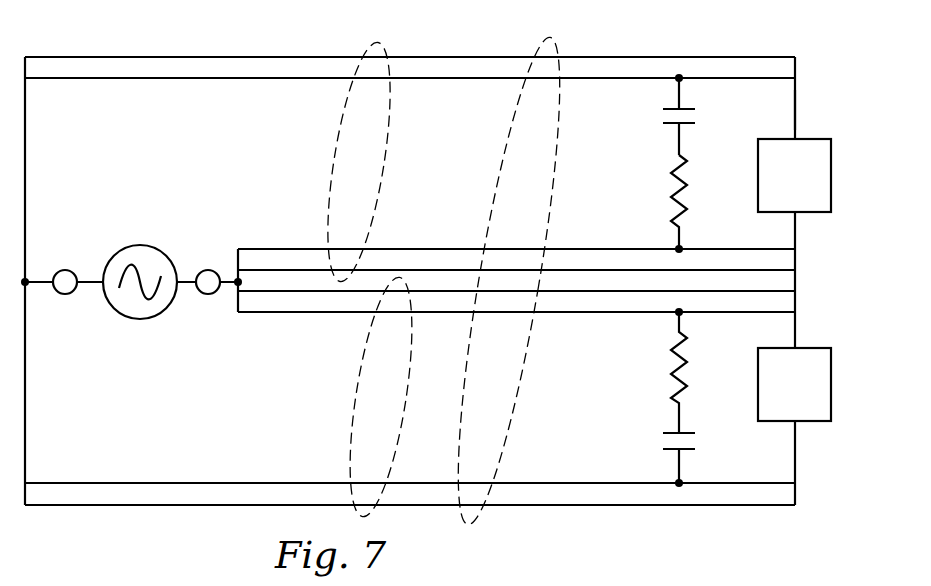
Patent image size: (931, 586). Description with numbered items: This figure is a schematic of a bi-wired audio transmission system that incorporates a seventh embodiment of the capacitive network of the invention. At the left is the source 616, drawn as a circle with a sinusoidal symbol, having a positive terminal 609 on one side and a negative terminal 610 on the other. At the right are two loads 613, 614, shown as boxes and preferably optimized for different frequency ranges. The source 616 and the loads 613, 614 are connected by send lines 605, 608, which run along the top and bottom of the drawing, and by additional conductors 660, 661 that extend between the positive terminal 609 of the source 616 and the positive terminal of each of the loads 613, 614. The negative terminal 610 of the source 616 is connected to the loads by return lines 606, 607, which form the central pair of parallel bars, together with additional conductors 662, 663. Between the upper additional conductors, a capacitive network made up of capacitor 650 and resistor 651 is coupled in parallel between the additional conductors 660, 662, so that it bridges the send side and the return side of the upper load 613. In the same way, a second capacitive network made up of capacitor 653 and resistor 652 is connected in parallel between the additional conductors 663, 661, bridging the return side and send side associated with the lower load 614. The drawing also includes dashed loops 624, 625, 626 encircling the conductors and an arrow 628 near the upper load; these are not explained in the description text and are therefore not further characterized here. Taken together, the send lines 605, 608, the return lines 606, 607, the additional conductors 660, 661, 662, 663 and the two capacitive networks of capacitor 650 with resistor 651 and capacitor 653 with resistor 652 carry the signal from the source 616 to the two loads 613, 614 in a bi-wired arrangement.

The send line 605 is at (467, 57).
The return line 606 is at (785, 272).
The return line 607 is at (775, 291).
The send line 608 is at (563, 505).
The positive terminal 609 is at (62, 270).
The negative terminal 610 is at (213, 268).
The load 613 is at (808, 212).
The load 614 is at (808, 422).
The source 616 is at (140, 320).
The magnetic flux loop 624 is at (346, 118).
The magnetic flux loop 625 is at (358, 366).
The magnetic flux loop 626 is at (512, 125).
The current direction arrow 628 is at (812, 110).
The capacitor 650 is at (690, 112).
The resistor 651 is at (675, 200).
The resistor 652 is at (673, 355).
The capacitor 653 is at (668, 434).
The additional conductor 660 is at (580, 78).
The additional conductor 661 is at (598, 483).
The additional conductor 662 is at (447, 249).
The additional conductor 663 is at (565, 312).